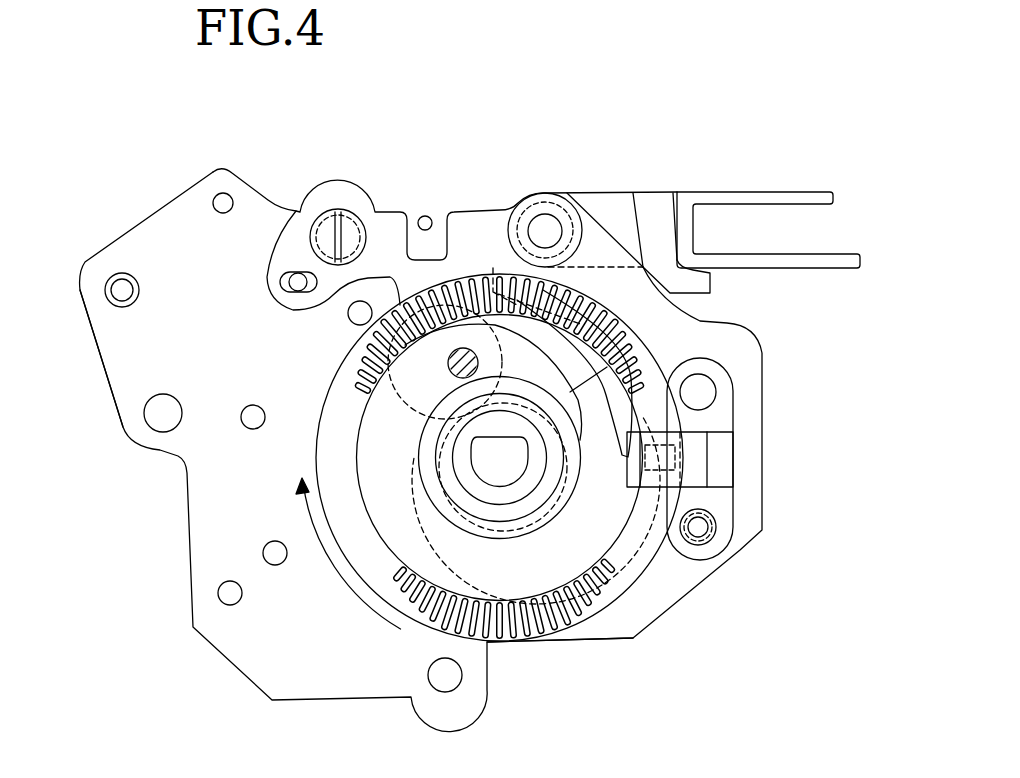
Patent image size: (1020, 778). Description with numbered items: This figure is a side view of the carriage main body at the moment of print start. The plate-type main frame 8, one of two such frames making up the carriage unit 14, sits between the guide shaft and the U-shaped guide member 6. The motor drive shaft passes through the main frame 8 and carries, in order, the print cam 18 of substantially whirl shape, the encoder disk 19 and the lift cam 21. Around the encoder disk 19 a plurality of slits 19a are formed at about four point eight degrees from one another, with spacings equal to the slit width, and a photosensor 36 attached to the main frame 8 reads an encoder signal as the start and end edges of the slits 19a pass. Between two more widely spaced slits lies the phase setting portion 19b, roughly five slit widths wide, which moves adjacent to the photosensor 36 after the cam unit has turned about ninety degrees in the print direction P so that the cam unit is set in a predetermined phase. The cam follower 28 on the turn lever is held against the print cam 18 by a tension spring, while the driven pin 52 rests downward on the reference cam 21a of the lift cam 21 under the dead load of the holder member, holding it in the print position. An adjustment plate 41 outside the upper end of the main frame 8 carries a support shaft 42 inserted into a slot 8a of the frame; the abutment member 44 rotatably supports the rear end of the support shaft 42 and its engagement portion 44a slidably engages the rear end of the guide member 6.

The guide member 6 is at (800, 190).
The main frame 8 is at (183, 510).
The slot 8a is at (570, 195).
The carriage unit 14 is at (126, 429).
The print cam 18 is at (516, 511).
The encoder disk 19 is at (615, 606).
The slit 19a is at (523, 643).
The phase setting portion 19b is at (493, 268).
The lift cam 21 is at (401, 564).
The reference cam 21a is at (560, 500).
The cam follower 28 is at (477, 427).
The photosensor 36 is at (675, 457).
The adjustment plate 41 is at (272, 254).
The support shaft 42 is at (525, 205).
The abutment member 44 is at (627, 193).
The engagement portion 44a is at (660, 246).
The driven pin 52 is at (448, 366).
The print direction P is at (333, 568).